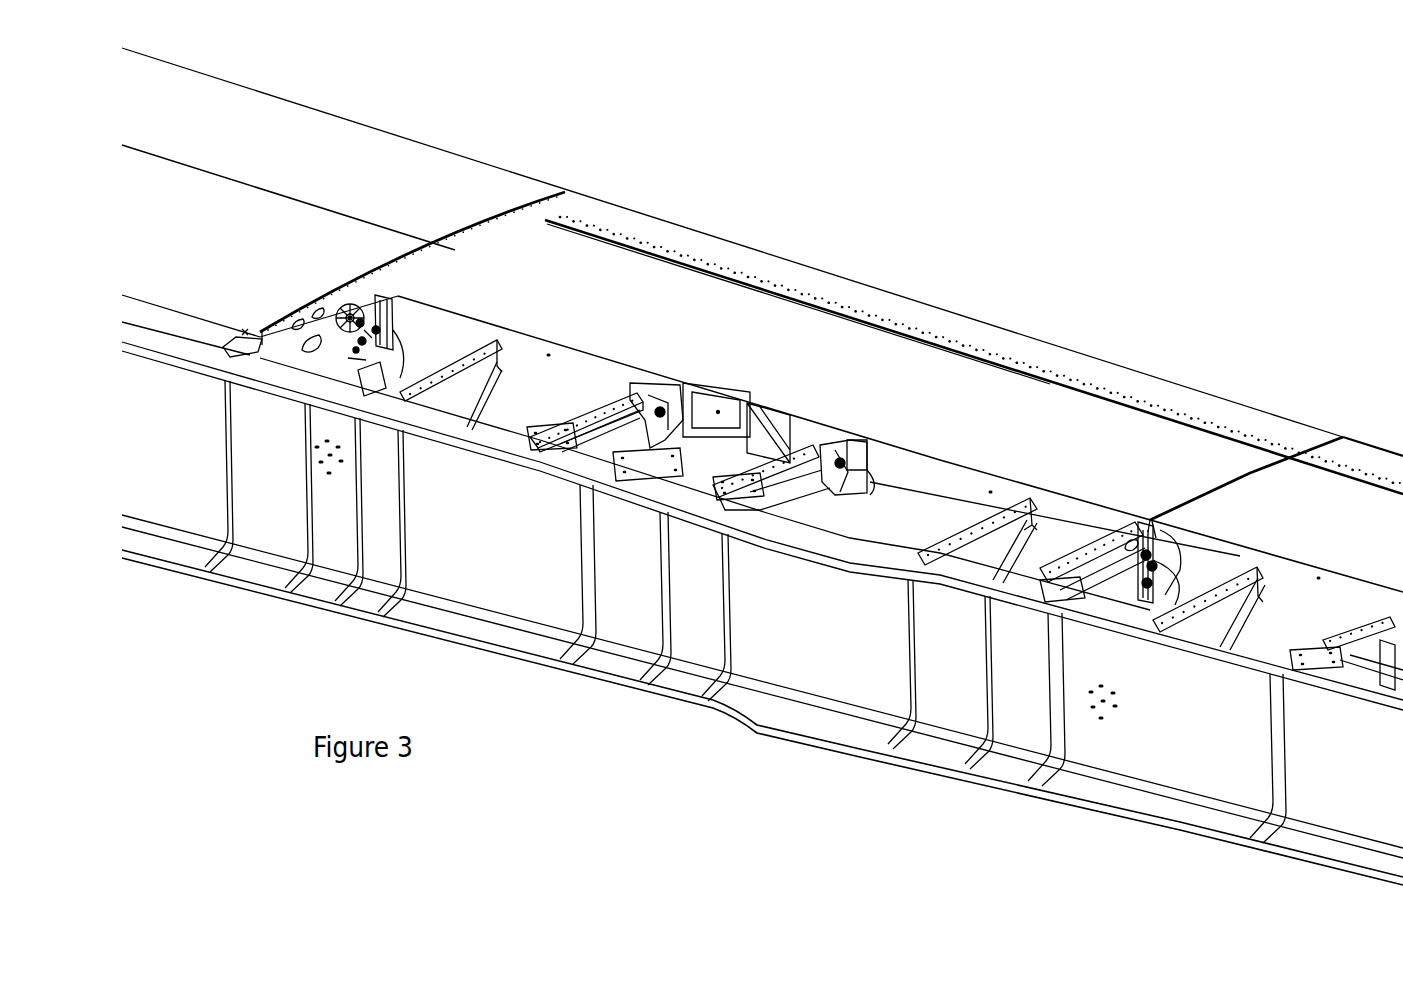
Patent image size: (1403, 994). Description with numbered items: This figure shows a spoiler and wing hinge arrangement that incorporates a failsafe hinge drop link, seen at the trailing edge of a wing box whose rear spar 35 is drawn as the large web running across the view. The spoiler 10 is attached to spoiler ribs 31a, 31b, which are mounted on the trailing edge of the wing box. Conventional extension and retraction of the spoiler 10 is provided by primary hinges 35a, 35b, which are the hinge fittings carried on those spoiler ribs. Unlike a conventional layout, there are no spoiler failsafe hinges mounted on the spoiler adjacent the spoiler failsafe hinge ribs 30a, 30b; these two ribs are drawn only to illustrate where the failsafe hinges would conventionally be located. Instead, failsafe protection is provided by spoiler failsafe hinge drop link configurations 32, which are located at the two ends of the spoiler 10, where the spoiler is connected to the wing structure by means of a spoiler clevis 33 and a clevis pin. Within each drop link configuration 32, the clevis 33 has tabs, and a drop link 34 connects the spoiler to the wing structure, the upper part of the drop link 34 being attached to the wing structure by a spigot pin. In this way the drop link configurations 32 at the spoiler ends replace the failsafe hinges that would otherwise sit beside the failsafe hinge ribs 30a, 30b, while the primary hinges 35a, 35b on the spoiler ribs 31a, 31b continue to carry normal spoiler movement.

The spoiler 10 is at (1027, 410).
The spoiler failsafe hinge rib 30a is at (485, 340).
The spoiler failsafe hinge rib 30b is at (1017, 500).
The spoiler rib 31a is at (625, 385).
The spoiler rib 31b is at (815, 420).
The spoiler failsafe hinge drop link configuration 32 is at (327, 282).
The spoiler clevis 33 is at (400, 302).
The drop link 34 is at (372, 316).
The rear spar 35 is at (492, 537).
The primary hinge 35a is at (657, 380).
The primary hinge 35b is at (862, 430).